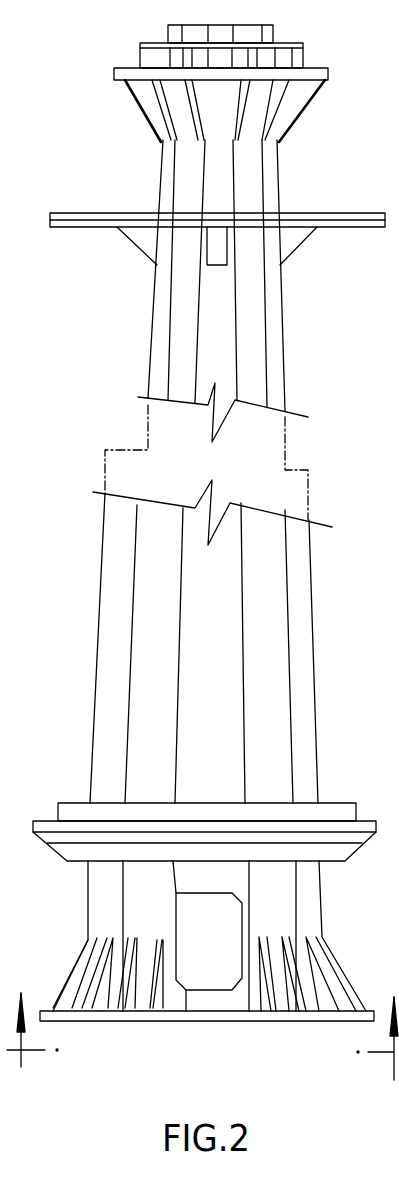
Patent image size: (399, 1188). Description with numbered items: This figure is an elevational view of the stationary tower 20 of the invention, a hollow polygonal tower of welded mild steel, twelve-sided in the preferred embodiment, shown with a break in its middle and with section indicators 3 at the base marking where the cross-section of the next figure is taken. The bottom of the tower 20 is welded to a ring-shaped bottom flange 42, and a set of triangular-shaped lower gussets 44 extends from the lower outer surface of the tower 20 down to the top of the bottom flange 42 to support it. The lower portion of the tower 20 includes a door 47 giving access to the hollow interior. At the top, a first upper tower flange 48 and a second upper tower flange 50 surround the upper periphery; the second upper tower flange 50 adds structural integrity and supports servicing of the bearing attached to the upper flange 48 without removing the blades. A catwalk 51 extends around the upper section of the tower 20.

The tower 20 is at (317, 706).
The bottom flange 42 is at (224, 1022).
The lower gussets 44 is at (345, 972).
The door 47 is at (178, 892).
The first upper tower flange 48 is at (288, 43).
The second upper tower flange 50 is at (313, 75).
The catwalk 51 is at (63, 213).
The section line 3- 3 is at (202, 1040).